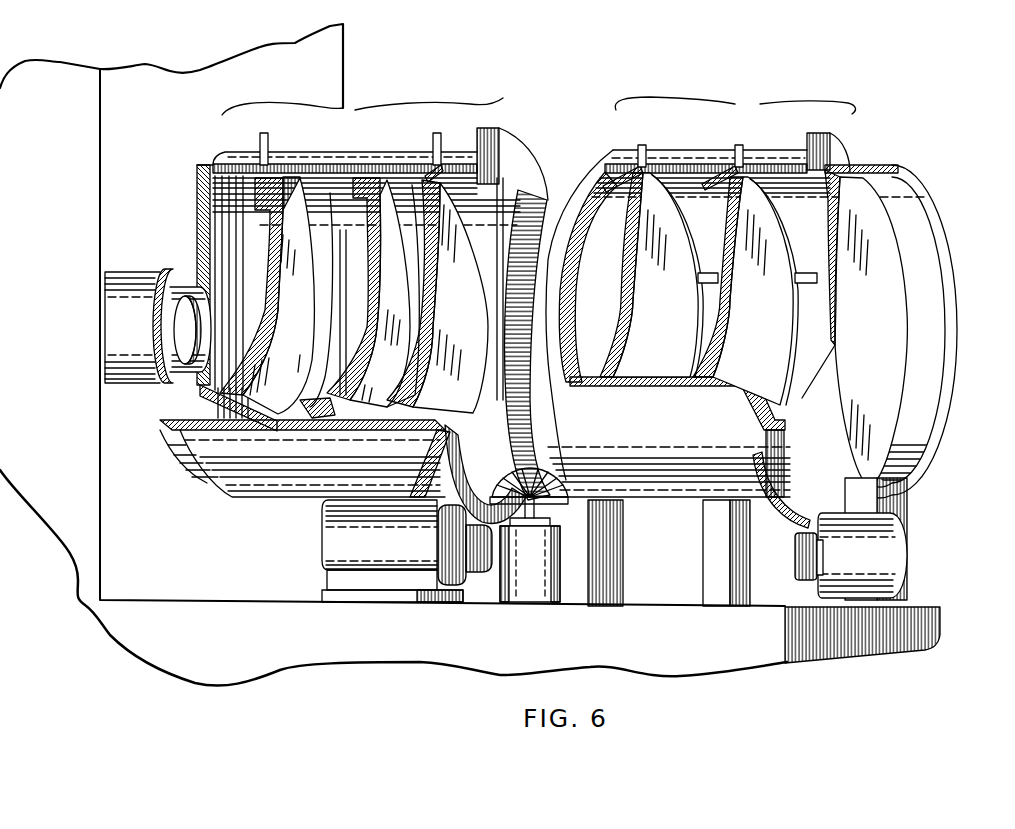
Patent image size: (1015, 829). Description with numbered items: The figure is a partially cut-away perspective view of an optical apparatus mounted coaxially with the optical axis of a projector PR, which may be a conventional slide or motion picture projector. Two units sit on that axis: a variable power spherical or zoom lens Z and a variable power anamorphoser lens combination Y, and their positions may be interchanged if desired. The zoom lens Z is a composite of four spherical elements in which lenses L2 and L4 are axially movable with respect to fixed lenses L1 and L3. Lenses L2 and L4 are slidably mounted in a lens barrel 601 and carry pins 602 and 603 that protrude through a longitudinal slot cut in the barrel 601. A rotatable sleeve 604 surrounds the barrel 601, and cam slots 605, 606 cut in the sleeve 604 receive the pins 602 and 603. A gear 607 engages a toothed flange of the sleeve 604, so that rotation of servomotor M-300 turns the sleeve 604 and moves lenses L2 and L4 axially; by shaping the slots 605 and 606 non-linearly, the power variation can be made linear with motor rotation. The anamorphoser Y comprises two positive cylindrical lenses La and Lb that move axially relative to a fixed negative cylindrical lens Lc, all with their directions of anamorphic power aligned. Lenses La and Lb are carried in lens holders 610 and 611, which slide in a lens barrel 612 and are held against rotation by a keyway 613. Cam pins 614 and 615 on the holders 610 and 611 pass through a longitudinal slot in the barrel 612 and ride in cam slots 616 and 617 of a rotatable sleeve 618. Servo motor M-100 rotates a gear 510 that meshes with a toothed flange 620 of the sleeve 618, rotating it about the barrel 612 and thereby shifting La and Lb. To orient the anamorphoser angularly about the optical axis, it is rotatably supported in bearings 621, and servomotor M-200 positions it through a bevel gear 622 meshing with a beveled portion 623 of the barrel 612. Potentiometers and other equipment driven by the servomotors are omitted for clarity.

The projector PR is at (50, 159).
The variable power spherical lens Z is at (362, 105).
The variable power anamorphoser lens combination Y is at (735, 98).
The lens barrel 601 is at (170, 430).
The pin 602 is at (258, 150).
The pin 603 is at (433, 143).
The rotatable sleeve 604 is at (472, 163).
The cam slot 605 is at (270, 160).
The cam slot 606 is at (435, 163).
The gear 607 is at (483, 568).
The lens holder 610 is at (697, 300).
The lens holder 611 is at (790, 300).
The lens barrel 612 is at (937, 289).
The keyway 613 is at (813, 270).
The cam pin 614 is at (640, 168).
The cam pin 615 is at (728, 152).
The cam slot 616 is at (650, 143).
The cam slot 617 is at (740, 147).
The rotatable sleeve 618 is at (660, 433).
The toothed flange 620 is at (840, 165).
The bearing 621 is at (720, 485).
The bevel gear 622 is at (571, 505).
The beveled portion 623 is at (510, 290).
The gear 510 is at (794, 563).
The servo motor M-100 is at (850, 553).
The servomotor M-200 is at (530, 590).
The servomotor M-300 is at (392, 551).
The fixed spherical lens L1 is at (188, 325).
The axially movable spherical lens L2 is at (277, 298).
The fixed spherical lens L3 is at (373, 292).
The axially movable spherical lens L4 is at (437, 296).
The positive cylindrical lens La is at (649, 275).
The positive cylindrical lens Lb is at (743, 291).
The negative cylindrical lens Lc is at (854, 329).